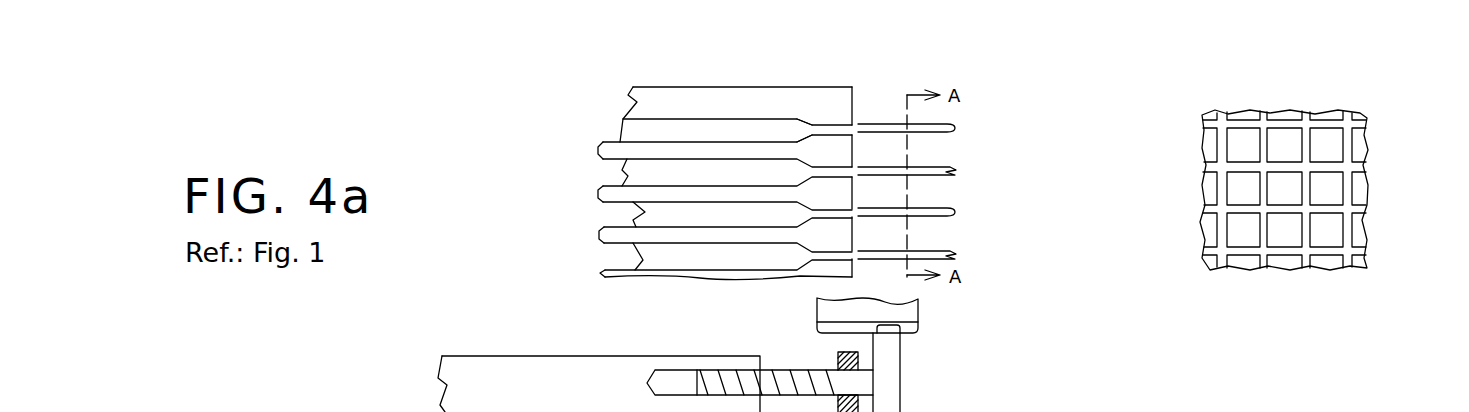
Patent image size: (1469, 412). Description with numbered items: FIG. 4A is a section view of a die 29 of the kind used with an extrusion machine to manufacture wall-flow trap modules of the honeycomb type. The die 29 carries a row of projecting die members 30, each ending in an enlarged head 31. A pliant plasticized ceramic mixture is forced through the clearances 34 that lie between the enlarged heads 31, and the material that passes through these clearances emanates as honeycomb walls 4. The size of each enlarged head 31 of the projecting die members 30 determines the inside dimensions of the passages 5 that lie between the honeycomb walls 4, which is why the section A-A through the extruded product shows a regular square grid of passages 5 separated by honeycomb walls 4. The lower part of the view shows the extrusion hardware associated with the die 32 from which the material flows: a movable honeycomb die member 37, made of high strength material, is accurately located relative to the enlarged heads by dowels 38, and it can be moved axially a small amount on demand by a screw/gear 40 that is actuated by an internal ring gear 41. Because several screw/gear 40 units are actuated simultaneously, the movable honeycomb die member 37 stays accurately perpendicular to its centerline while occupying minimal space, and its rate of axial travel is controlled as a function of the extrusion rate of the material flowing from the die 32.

The die 29 is at (669, 64).
The projecting die members 30 is at (723, 143).
The enlarged heads 31 is at (852, 148).
The clearances 34 is at (838, 128).
The honeycomb walls 4 is at (1243, 203).
The passages 5 is at (1330, 140).
The die 32 is at (508, 331).
The dowels 38 is at (755, 382).
The screw/gear 40 is at (788, 411).
The internal ring gear 41 is at (817, 322).
The movable honeycomb die member 37 is at (937, 410).